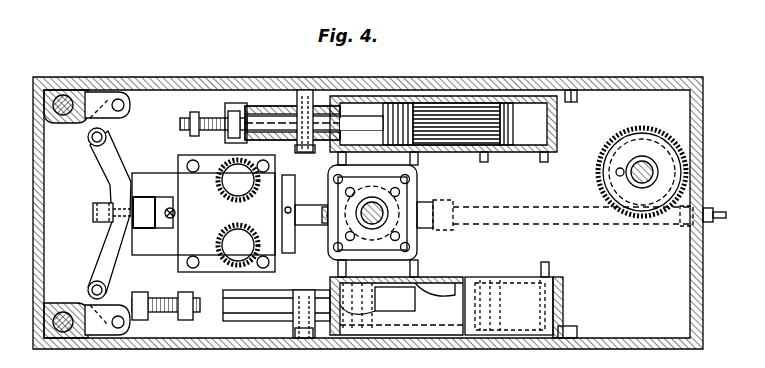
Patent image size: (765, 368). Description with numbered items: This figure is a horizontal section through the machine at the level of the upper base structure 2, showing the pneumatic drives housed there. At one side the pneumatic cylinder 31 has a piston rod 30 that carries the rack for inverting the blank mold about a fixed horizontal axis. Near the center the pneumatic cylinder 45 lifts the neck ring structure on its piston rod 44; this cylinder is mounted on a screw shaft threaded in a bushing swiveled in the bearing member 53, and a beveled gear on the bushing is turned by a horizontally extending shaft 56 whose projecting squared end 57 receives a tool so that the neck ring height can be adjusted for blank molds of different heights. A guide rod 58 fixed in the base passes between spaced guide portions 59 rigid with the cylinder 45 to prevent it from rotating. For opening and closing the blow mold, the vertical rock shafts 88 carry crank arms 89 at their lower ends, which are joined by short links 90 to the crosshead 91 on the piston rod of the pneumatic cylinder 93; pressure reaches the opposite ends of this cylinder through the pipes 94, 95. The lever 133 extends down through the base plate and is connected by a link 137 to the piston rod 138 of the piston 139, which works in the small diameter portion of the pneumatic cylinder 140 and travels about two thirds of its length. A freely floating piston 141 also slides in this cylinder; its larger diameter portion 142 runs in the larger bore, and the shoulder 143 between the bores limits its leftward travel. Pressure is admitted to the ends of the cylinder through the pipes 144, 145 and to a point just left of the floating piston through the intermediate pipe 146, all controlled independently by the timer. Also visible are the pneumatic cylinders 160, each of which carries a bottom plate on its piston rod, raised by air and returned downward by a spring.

The upper base structure 2 is at (628, 83).
The piston rod 30 is at (635, 165).
The pneumatic cylinder 31 is at (645, 130).
The piston rod 44 is at (400, 205).
The pneumatic cylinder 45 is at (455, 222).
The bearing member 53 is at (412, 243).
The horizontally extending shaft 56 is at (520, 228).
The squared end 57 is at (717, 212).
The guide rod 58 is at (324, 213).
The guide portions 59 is at (332, 210).
The vertical rock shafts 88 is at (62, 95).
The crank arms 89 is at (98, 100).
The short links 90 is at (108, 132).
The crosshead 91 is at (115, 236).
The pneumatic cylinder 93 is at (192, 185).
The pipe 94 is at (175, 216).
The pipe 95 is at (290, 253).
The lever 133 is at (182, 125).
The link 137 is at (213, 118).
The piston rod 138 is at (265, 118).
The piston 139 is at (398, 118).
The pneumatic cylinder 140 is at (455, 118).
The freely floating piston 141 is at (560, 100).
The larger diameter portion 142 is at (544, 155).
The shoulder 143 is at (484, 152).
The pipe 144 is at (305, 150).
The pipe 145 is at (560, 110).
The intermediate pipe 146 is at (416, 158).
The pneumatic cylinder 160 is at (225, 195).